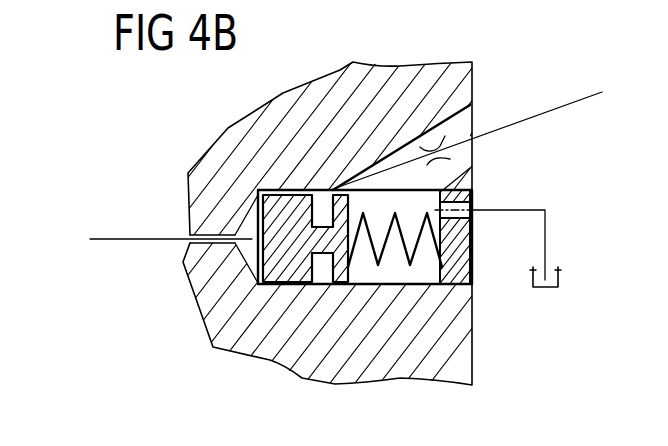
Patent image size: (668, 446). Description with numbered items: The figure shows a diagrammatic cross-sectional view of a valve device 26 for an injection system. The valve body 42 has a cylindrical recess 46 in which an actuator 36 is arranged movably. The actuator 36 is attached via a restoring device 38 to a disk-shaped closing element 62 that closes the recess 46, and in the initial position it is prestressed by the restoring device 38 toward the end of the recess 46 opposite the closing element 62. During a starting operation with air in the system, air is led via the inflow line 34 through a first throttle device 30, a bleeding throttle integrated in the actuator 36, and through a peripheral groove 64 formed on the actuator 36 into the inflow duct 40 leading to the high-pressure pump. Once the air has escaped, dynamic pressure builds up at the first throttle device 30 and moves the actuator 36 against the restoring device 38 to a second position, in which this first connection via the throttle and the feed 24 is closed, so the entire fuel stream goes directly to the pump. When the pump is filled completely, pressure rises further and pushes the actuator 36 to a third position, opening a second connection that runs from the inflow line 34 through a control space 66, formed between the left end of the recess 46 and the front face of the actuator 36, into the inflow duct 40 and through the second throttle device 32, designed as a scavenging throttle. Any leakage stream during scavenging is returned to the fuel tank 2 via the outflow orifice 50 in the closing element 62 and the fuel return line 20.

The fuel tank 2 is at (553, 290).
The fuel return line 20 is at (547, 246).
The feed 24 is at (122, 238).
The valve device 26 is at (342, 208).
The first throttle device 30 is at (325, 230).
The second throttle device 32 is at (440, 136).
The inflow line 34 is at (148, 243).
The actuator 36 is at (290, 272).
The restoring device 38 is at (383, 252).
The inflow duct 40 is at (575, 102).
The valve body 42 is at (388, 77).
The cylindrical recess 46 is at (418, 270).
The outflow orifice 50 is at (472, 203).
The closing element 62 is at (462, 263).
The peripheral groove 64 is at (320, 207).
The control space 66 is at (250, 263).